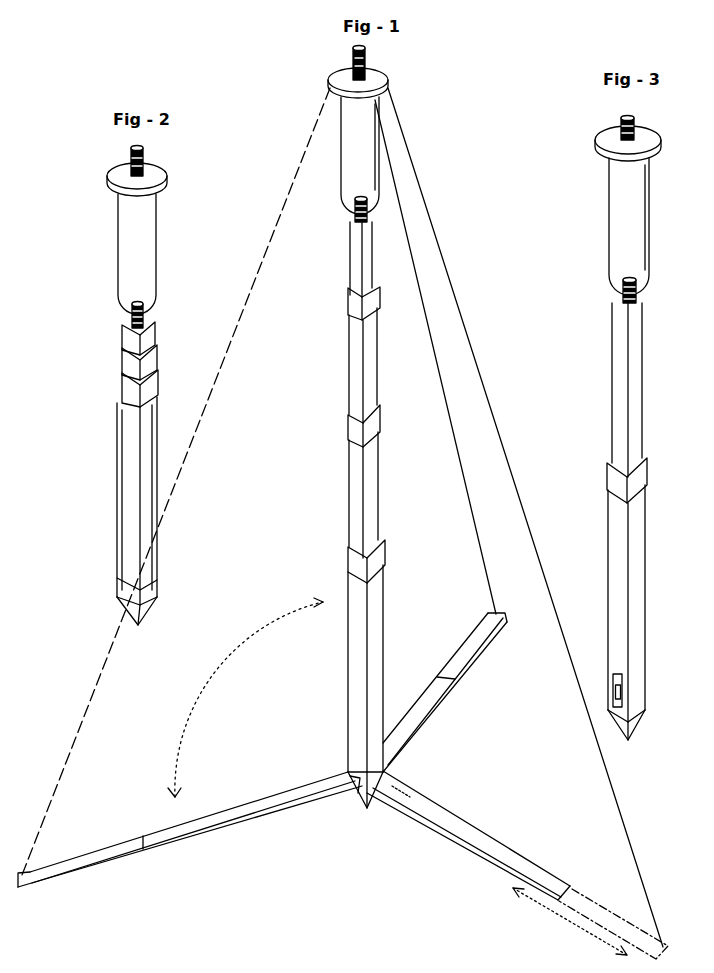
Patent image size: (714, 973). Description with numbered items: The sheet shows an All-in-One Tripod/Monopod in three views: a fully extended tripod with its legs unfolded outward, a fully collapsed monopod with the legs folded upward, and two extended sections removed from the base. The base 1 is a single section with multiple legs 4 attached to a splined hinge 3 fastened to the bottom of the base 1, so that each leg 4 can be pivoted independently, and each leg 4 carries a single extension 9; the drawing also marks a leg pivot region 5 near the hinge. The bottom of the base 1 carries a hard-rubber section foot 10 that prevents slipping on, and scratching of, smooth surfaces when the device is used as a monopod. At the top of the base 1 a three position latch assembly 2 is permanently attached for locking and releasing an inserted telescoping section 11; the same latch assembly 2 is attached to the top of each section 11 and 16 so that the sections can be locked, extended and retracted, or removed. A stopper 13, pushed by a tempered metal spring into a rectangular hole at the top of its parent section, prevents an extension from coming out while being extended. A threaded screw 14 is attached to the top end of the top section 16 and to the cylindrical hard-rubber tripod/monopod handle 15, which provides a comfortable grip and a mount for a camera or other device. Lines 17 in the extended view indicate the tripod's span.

In FIG. 1, the base section 1 is at (355, 668).
In FIG. 1, the three position latch assembly 2 is at (352, 435).
In FIG. 3, the three position latch assembly 2 is at (614, 480).
In FIG. 1, the splined hinge 3 is at (331, 769).
In FIG. 1, the leg 4 is at (294, 756).
In FIG. 1, the leg pivot 5 is at (412, 773).
In FIG. 1, the extension 9 is at (552, 793).
In FIG. 1, the section foot 10 is at (350, 805).
In FIG. 3, the section foot 10 is at (620, 728).
In FIG. 1, the telescoping section 11 is at (346, 390).
In FIG. 3, the telescoping section 11 is at (611, 512).
In FIG. 3, the stopper 13 is at (605, 688).
In FIG. 1, the threaded screw 14 is at (329, 57).
In FIG. 3, the threaded screw 14 is at (599, 122).
In FIG. 1, the tripod/monopod handle 15 is at (360, 155).
In FIG. 3, the tripod/monopod handle 15 is at (609, 226).
In FIG. 1, the top section 16 is at (342, 221).
In FIG. 1, the guy line 17 is at (292, 163).